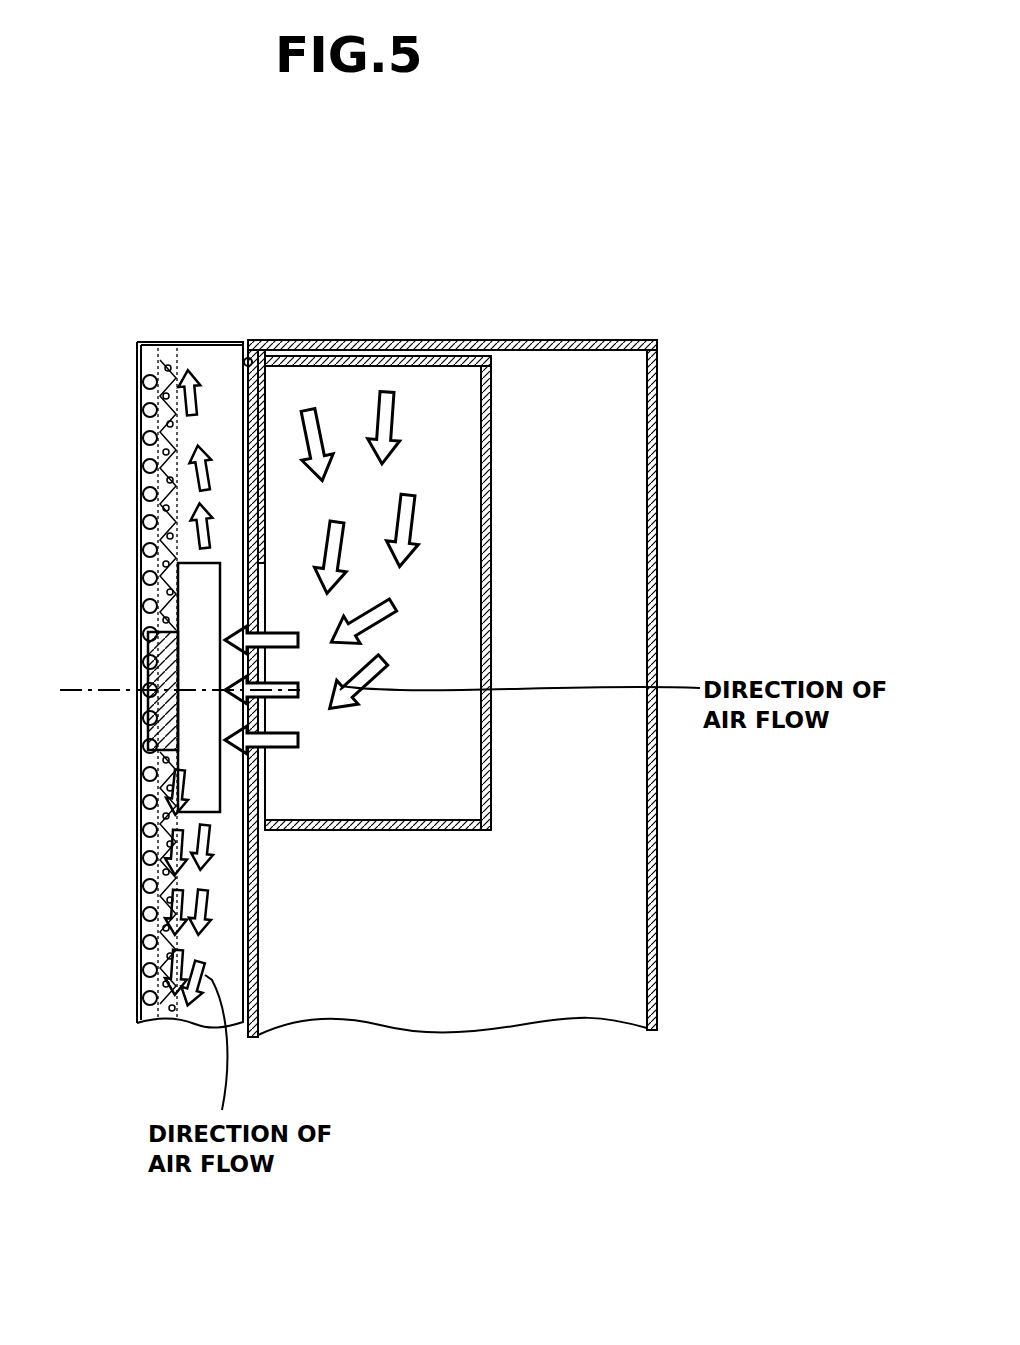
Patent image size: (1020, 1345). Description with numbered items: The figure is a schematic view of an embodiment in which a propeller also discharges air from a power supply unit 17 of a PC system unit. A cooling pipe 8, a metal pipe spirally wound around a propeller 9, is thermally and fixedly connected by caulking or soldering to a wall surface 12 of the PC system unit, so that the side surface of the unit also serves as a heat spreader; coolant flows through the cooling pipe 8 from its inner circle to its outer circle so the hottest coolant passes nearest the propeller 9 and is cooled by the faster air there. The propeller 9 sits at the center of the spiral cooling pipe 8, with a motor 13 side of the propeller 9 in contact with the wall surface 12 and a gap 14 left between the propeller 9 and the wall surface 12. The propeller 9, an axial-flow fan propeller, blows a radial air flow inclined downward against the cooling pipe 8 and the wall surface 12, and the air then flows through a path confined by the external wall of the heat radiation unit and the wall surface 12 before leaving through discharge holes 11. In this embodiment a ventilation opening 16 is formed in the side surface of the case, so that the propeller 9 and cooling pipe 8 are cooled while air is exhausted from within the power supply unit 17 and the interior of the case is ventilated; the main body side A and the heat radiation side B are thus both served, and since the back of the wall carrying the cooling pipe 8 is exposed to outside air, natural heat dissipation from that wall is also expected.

The cooling pipe 8 is at (150, 384).
The propeller 9 is at (200, 650).
The discharge holes 11 is at (192, 343).
The wall surface 12 is at (258, 960).
The motor 13 is at (150, 666).
The gap 14 is at (207, 302).
The ventilation opening 16 is at (266, 785).
The power supply unit 17 is at (443, 413).
The main body housing A is at (613, 486).
The air flow channel B is at (215, 953).